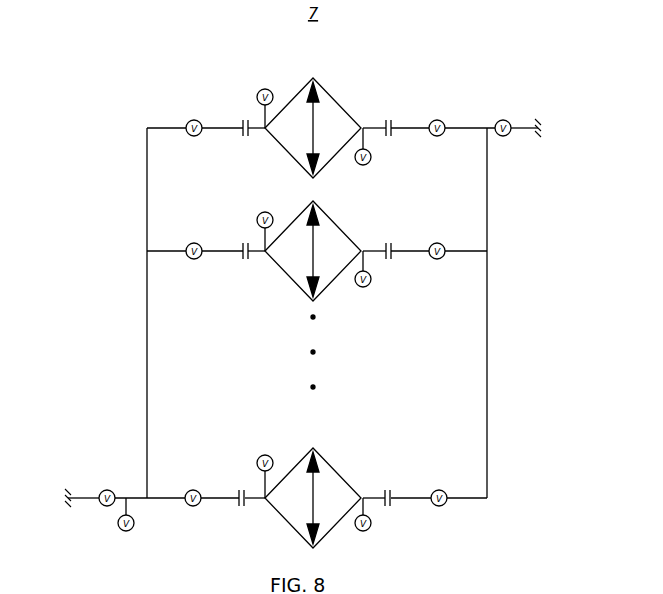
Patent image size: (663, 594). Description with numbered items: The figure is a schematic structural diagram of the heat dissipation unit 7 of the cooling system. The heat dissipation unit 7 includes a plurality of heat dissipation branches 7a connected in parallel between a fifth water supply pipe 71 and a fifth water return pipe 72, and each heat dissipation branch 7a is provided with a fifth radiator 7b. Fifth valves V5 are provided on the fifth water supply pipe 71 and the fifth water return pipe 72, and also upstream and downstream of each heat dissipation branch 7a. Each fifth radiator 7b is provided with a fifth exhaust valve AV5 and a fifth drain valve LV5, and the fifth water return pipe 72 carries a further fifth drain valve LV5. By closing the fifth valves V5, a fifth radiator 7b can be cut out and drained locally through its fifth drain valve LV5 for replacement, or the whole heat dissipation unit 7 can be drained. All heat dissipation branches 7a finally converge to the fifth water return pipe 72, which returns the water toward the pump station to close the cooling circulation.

The heat dissipation unit 7 is at (303, 313).
The heat dissipation branch 7a is at (228, 112).
The fifth radiator 7b is at (333, 108).
The fifth water supply pipe 71 is at (536, 125).
The fifth water return pipe 72 is at (70, 494).
The fifth valve V5 is at (187, 121).
The fifth exhaust valve AV5 is at (259, 90).
The fifth drain valve LV5 is at (371, 160).